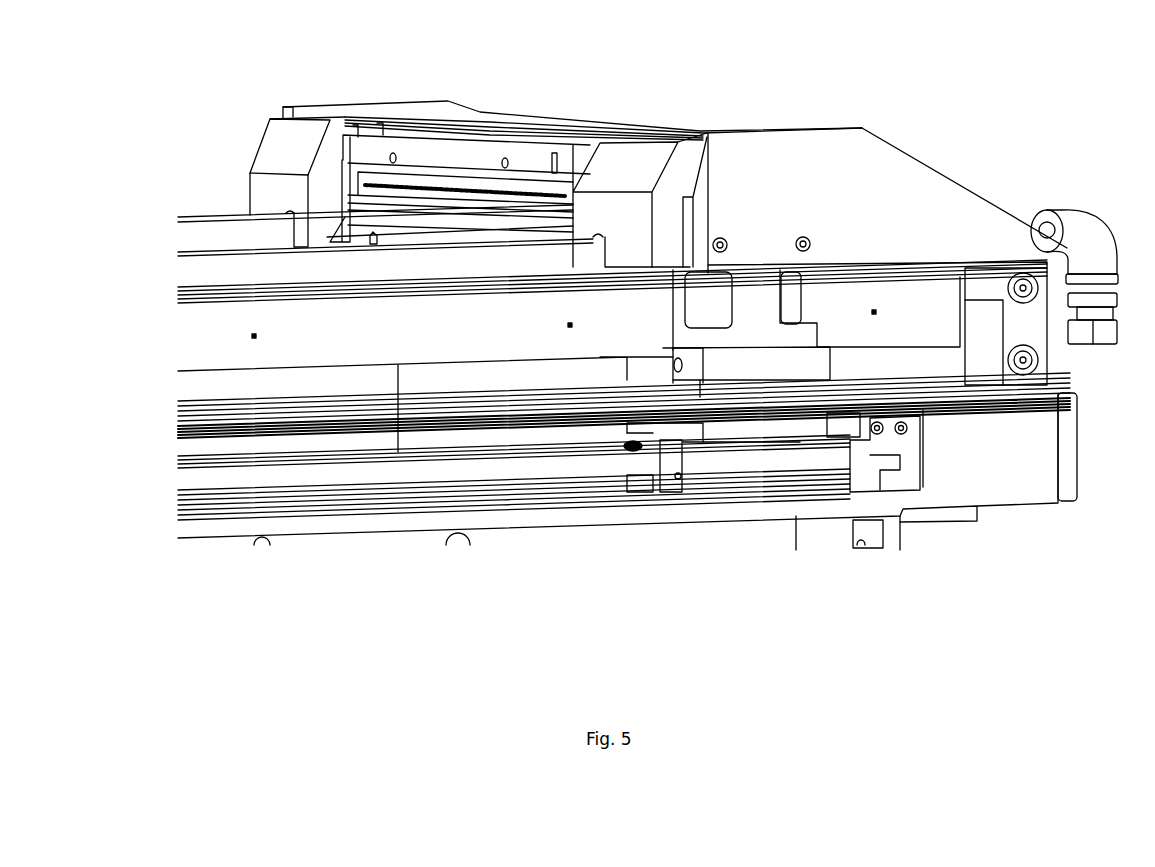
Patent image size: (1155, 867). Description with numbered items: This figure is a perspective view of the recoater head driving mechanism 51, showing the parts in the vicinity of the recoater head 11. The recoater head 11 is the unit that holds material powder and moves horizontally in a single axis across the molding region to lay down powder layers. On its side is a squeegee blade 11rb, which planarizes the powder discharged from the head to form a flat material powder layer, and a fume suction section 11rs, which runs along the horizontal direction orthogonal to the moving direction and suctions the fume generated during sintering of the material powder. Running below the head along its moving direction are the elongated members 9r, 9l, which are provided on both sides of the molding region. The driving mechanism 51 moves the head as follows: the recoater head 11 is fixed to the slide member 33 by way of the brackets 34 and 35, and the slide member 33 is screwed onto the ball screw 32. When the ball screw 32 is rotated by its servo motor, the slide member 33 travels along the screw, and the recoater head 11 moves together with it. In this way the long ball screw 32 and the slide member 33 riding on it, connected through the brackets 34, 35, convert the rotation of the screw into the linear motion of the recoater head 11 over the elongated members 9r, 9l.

The recoater head 11 is at (818, 93).
The fume suction section 11rs is at (445, 192).
The squeegee blade 11rb is at (375, 227).
The elongated member 9r is at (195, 222).
The elongated member 9l is at (193, 255).
The bracket 35 is at (763, 298).
The ball screw 32 is at (543, 472).
The slide member 33 is at (672, 487).
The bracket 34 is at (730, 430).
The recoater head driving mechanism 51 is at (500, 558).